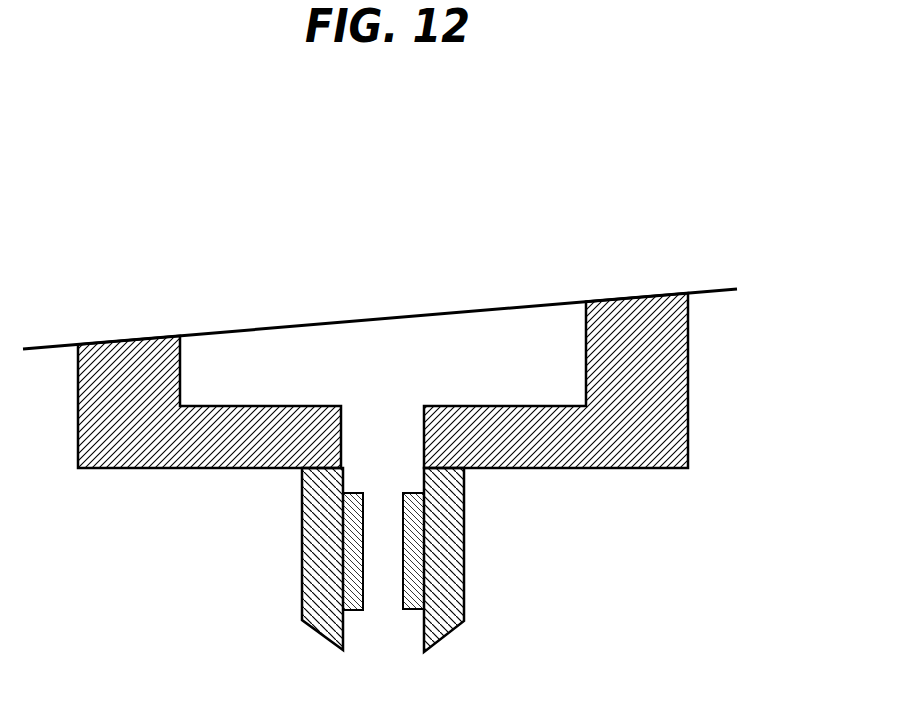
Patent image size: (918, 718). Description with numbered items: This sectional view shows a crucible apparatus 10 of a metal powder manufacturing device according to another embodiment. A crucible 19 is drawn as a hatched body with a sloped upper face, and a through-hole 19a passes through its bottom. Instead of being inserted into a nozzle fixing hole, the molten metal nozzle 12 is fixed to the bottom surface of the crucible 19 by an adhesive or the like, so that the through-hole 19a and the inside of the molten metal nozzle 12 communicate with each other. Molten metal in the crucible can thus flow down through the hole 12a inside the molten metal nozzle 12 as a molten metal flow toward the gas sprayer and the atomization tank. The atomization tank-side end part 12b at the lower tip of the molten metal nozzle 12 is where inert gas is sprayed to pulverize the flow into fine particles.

The connector 10 is at (208, 292).
The crucible 19 is at (650, 400).
The through-hole 19a is at (424, 452).
The molten metal nozzle 12 is at (456, 581).
The hole 12a is at (455, 502).
The atomization tank-side end part 12b is at (412, 608).